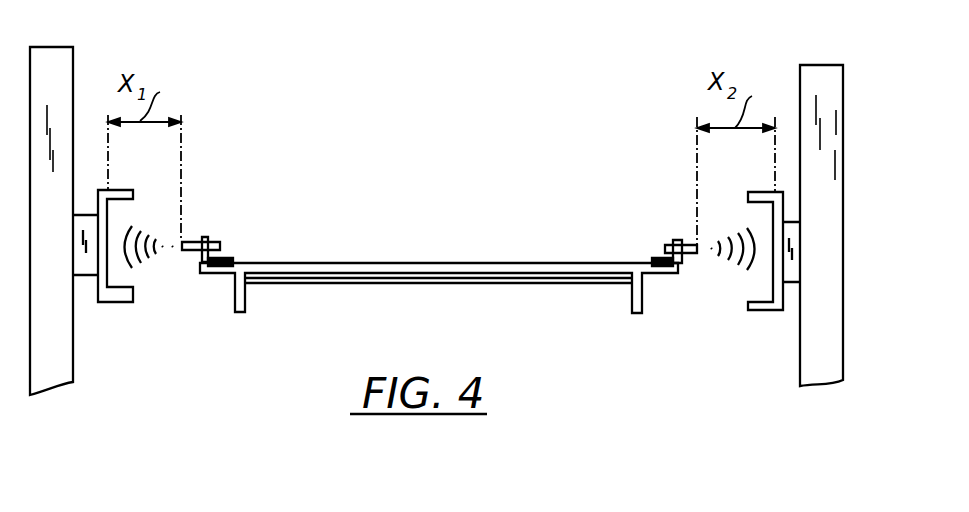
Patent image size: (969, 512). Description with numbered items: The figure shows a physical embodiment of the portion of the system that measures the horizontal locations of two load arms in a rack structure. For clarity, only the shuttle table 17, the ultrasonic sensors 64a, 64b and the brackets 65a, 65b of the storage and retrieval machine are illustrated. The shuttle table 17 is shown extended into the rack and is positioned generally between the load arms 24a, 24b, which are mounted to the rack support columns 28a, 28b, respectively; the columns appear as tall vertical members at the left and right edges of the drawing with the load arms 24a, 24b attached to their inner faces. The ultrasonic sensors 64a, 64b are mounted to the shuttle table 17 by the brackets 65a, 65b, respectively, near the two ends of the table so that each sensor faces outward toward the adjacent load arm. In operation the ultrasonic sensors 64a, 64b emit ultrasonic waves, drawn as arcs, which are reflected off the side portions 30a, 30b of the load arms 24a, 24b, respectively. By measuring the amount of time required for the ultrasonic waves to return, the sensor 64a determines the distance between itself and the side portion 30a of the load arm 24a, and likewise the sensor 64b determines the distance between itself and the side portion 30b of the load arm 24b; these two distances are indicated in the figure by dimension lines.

The shuttle table 17 is at (414, 263).
The load arm 24a is at (122, 303).
The load arm 24b is at (762, 309).
The rack support column 28a is at (75, 48).
The rack support column 28b is at (838, 110).
The side portion 30a is at (107, 287).
The side portion 30b is at (770, 282).
The ultrasonic sensor 64a is at (193, 241).
The ultrasonic sensor 64b is at (688, 244).
The bracket 65a is at (228, 259).
The bracket 65b is at (655, 258).